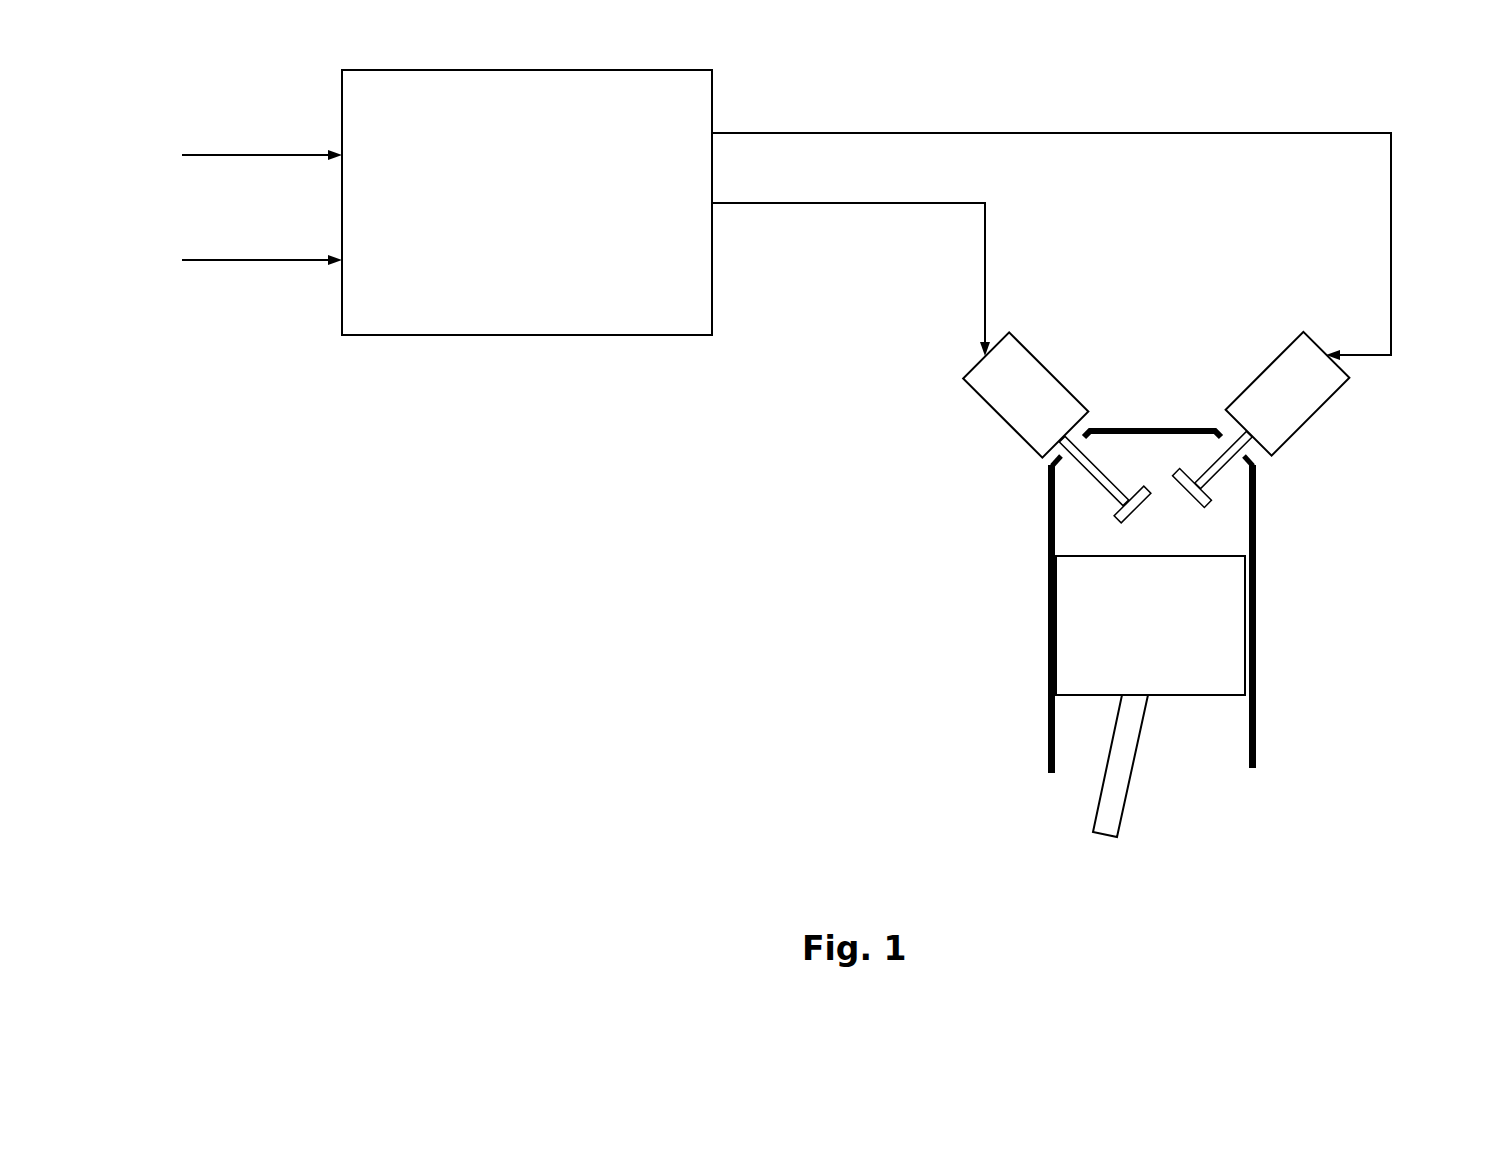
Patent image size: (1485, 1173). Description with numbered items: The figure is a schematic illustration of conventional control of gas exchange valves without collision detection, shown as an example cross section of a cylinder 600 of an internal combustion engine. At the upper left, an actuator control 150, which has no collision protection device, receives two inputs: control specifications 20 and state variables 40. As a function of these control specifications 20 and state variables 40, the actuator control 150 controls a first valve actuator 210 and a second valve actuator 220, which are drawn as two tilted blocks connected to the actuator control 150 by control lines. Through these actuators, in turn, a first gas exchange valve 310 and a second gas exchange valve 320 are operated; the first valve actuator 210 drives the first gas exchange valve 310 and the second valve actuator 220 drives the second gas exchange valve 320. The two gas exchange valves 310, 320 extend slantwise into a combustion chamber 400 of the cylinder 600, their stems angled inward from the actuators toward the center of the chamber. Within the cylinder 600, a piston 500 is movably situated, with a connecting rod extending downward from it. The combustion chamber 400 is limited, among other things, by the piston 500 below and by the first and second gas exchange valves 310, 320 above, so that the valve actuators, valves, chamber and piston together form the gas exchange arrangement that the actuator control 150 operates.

The control specifications 20 is at (235, 157).
The state variables 40 is at (235, 262).
The actuator control 150 is at (560, 207).
The first valve actuator 210 is at (1013, 393).
The second valve actuator 220 is at (1288, 395).
The first gas exchange valve 310 is at (1127, 510).
The second gas exchange valve 320 is at (1202, 508).
The combustion chamber 400 is at (1065, 538).
The piston 500 is at (1095, 642).
The cylinder 600 is at (1141, 634).